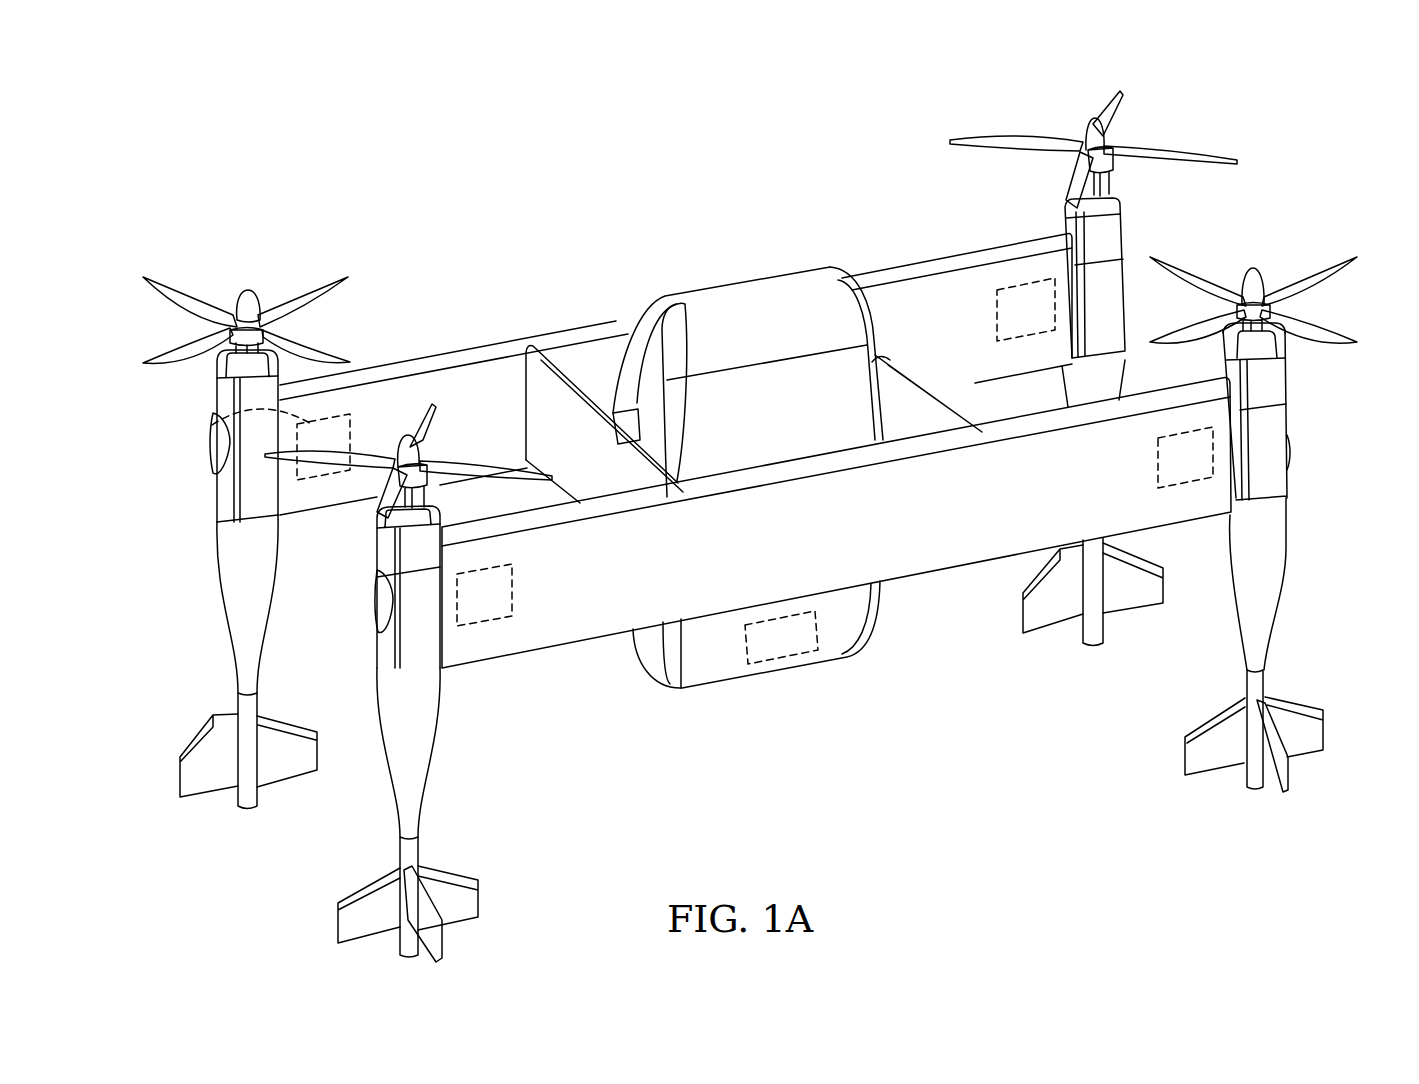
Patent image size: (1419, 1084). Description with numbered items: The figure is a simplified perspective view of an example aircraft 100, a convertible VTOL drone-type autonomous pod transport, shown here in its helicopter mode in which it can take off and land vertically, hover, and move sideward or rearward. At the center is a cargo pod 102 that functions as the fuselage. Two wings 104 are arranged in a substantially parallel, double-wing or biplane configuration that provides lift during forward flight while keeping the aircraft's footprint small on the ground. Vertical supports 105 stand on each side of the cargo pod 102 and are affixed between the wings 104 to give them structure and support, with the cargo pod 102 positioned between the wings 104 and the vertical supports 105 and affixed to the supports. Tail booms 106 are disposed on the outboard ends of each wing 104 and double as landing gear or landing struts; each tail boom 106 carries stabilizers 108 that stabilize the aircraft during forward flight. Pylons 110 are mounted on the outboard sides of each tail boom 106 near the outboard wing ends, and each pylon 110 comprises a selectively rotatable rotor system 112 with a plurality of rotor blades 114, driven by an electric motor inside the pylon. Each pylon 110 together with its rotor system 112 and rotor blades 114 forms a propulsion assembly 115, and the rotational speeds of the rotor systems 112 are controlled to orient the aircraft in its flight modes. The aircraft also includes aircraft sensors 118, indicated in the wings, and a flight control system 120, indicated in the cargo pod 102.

The aircraft 100 is at (751, 500).
The cargo pod 102 is at (747, 284).
The wings 104 is at (600, 323).
The vertical supports 105 is at (618, 487).
The tail booms 106 is at (751, 750).
The stabilizers 108 is at (1288, 790).
The pylons 110 is at (218, 487).
The rotor system 112 is at (752, 263).
The rotor blades 114 is at (312, 282).
The propulsion assembly 115 is at (753, 305).
The aircraft sensors 118 is at (296, 440).
The flight control system 120 is at (783, 662).